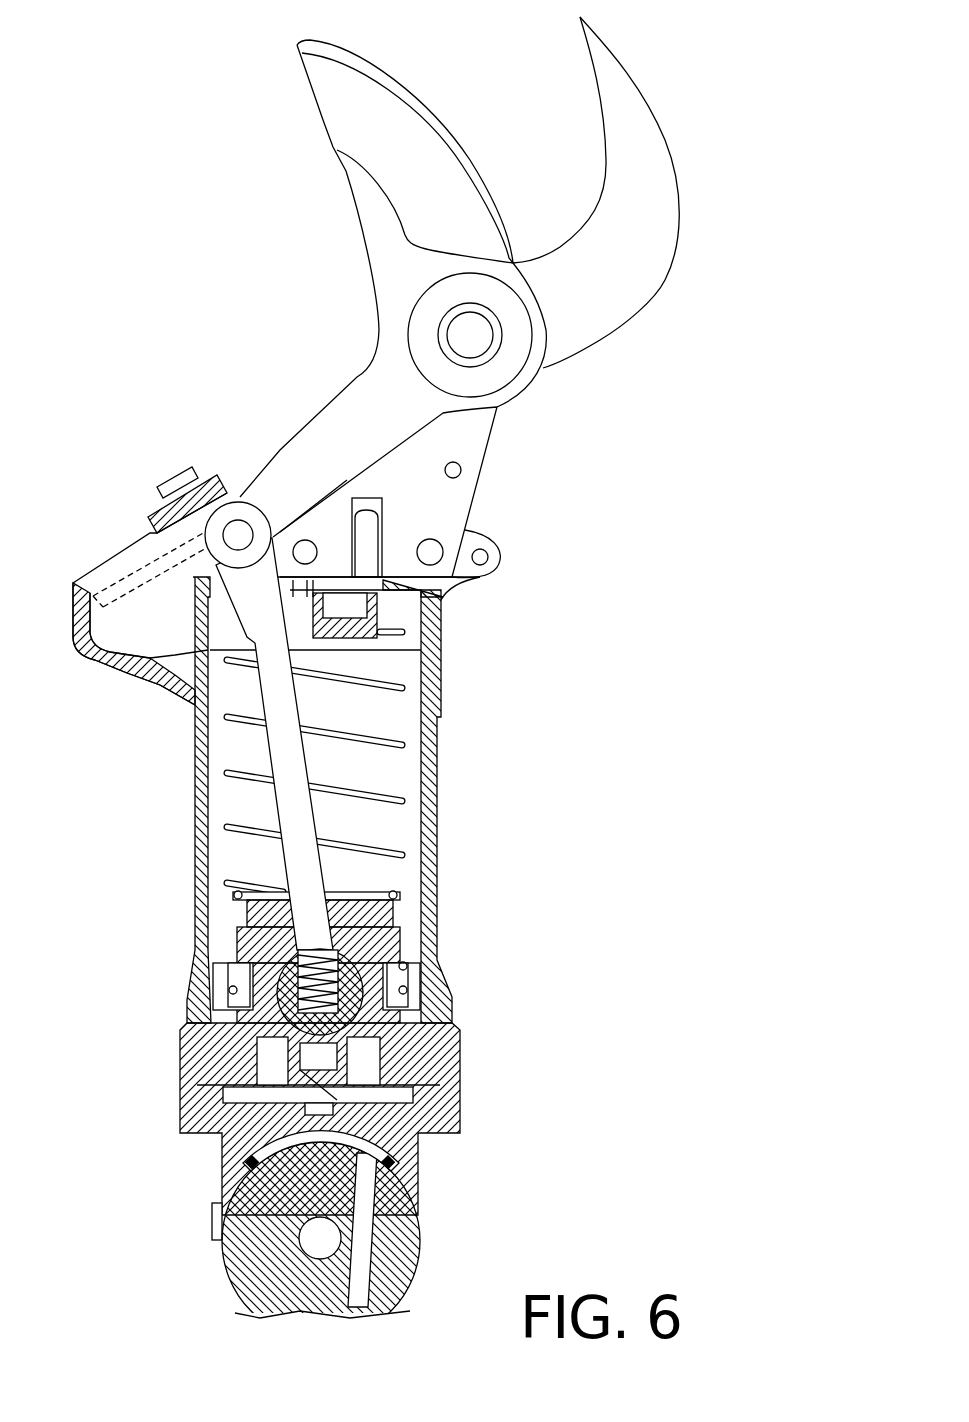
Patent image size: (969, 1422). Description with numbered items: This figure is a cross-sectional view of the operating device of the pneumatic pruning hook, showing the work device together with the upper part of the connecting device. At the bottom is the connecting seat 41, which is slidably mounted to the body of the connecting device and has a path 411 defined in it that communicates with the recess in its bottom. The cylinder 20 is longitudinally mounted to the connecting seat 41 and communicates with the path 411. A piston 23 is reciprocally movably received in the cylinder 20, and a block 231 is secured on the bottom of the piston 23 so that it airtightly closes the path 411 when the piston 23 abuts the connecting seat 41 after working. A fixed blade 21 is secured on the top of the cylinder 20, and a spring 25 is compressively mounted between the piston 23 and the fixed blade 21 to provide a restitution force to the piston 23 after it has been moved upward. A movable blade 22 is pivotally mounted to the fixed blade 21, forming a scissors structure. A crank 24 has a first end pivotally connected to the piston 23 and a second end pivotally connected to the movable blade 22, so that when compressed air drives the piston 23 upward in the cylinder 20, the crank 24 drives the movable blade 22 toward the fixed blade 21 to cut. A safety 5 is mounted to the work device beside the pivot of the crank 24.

The safety 5 is at (135, 528).
The cylinder 20 is at (440, 858).
The fixed blade 21 is at (643, 190).
The movable blade 22 is at (350, 172).
The piston 23 is at (445, 1018).
The crank 24 is at (280, 693).
The spring 25 is at (378, 740).
The connecting seat 41 is at (447, 1085).
The block 231 is at (367, 1112).
The path 411 is at (320, 1115).